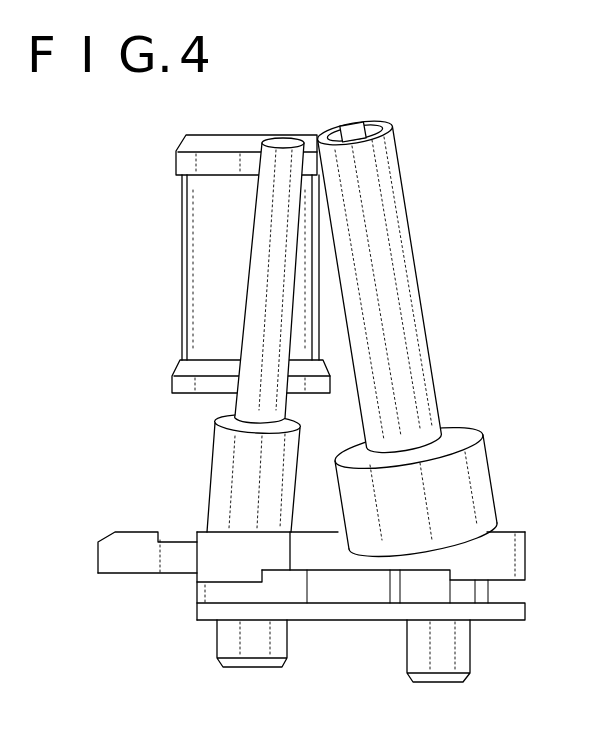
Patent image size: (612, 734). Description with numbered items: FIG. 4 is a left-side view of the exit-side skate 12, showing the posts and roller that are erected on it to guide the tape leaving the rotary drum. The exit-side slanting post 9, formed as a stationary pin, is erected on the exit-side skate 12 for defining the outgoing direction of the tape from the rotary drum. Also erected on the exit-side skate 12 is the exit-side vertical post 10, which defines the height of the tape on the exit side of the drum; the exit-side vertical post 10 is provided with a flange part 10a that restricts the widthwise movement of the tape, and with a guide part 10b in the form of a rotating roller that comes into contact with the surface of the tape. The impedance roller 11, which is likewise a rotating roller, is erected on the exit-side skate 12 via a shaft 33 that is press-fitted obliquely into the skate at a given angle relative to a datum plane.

The exit-side slanting post 9 is at (277, 157).
The exit-side vertical post 10 is at (200, 255).
The flange part 10a is at (187, 148).
The guide part 10b is at (197, 289).
The impedance roller 11 is at (406, 307).
The exit-side skate 12 is at (507, 552).
The shaft 33 is at (353, 122).